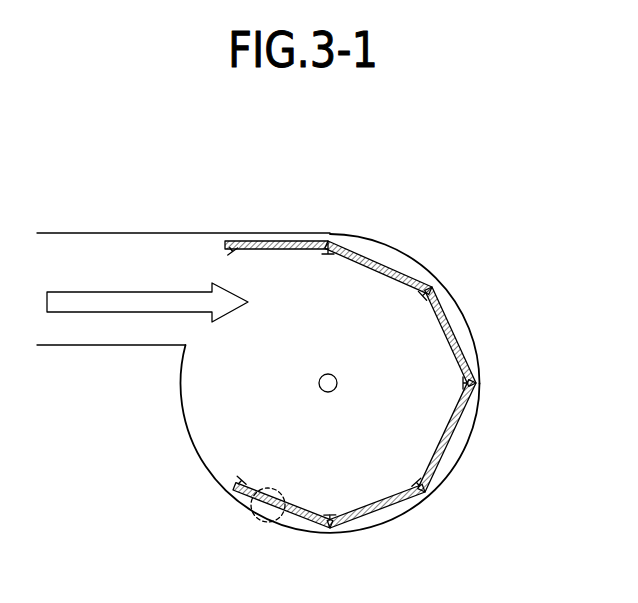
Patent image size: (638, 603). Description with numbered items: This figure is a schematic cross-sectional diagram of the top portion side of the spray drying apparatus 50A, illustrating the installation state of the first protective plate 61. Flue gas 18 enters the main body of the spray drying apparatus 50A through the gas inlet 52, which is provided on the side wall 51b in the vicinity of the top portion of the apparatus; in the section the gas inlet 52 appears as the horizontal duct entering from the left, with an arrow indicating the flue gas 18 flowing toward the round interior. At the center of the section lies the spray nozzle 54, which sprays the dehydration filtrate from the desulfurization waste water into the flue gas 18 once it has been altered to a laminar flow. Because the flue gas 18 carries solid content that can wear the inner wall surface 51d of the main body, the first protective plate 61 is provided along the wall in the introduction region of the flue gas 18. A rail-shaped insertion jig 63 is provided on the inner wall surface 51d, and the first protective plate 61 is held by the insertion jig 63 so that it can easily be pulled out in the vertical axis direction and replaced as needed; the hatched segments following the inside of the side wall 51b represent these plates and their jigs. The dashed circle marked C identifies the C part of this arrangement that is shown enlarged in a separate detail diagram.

The flue gas 18 is at (78, 292).
The gas inlet 52 is at (126, 233).
The spray drying apparatus 50A is at (164, 437).
The side wall 51b is at (466, 445).
The inner wall surface 51d is at (461, 325).
The first protective plate 61 is at (391, 266).
The insertion jig 63 is at (433, 296).
The spray nozzle 54 is at (337, 382).
The C part C is at (267, 518).